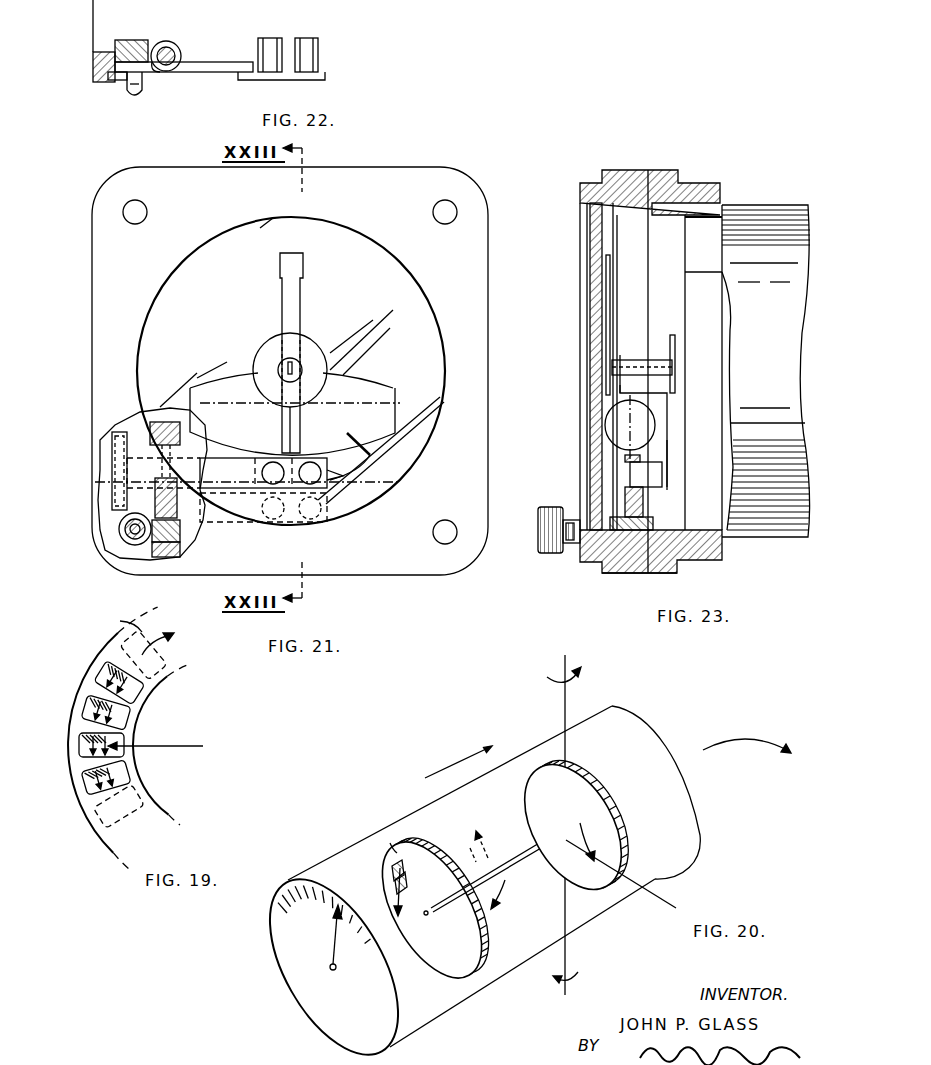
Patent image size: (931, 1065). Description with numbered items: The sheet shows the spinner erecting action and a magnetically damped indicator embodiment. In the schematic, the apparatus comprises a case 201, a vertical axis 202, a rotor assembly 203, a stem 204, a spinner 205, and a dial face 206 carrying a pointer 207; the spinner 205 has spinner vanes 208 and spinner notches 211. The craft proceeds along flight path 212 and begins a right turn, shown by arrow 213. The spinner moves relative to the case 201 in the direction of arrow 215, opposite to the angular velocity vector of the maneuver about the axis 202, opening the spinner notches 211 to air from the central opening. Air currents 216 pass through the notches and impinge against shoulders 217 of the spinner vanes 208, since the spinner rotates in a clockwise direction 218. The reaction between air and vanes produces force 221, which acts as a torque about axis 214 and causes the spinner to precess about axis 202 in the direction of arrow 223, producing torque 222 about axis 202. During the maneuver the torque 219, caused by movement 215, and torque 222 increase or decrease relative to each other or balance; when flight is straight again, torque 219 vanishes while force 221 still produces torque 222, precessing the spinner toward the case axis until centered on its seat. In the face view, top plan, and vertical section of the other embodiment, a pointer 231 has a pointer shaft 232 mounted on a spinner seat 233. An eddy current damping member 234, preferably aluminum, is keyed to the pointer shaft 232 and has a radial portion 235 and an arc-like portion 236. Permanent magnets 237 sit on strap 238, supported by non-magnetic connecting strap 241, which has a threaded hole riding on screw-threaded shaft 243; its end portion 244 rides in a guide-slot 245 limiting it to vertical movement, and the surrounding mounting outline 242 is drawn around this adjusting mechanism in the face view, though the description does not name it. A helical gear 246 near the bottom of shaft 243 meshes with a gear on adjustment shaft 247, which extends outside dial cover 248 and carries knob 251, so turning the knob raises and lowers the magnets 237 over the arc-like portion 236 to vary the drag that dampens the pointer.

In FIG. 20, the case 201 is at (407, 813).
In FIG. 20, the vertical axis 202 is at (567, 943).
In FIG. 20, the rotor assembly 203 is at (598, 805).
In FIG. 20, the stem 204 is at (513, 860).
In FIG. 19, the spinner 205 is at (98, 661).
In FIG. 20, the spinner 205 is at (437, 853).
In FIG. 20, the dial face 206 is at (358, 1015).
In FIG. 20, the pointer 207 is at (335, 950).
In FIG. 19, the spinner vanes 208 is at (138, 709).
In FIG. 19, the spinner notches 211 is at (125, 770).
In FIG. 20, the spinner notches 211 is at (390, 843).
In FIG. 20, the flight path 212 is at (452, 768).
In FIG. 20, the arrow (right turn) 213 is at (728, 742).
In FIG. 20, the axis 214 is at (672, 898).
In FIG. 20, the arrow (spinner movement direction) 215 is at (497, 905).
In FIG. 19, the air currents 216 is at (186, 747).
In FIG. 19, the shoulders 217 is at (84, 788).
In FIG. 19, the clockwise direction 218 is at (131, 634).
In FIG. 20, the clockwise direction 218 is at (612, 830).
In FIG. 20, the torque 219 is at (582, 671).
In FIG. 19, the force 221 is at (95, 746).
In FIG. 20, the force 221 is at (391, 868).
In FIG. 20, the torque 222 is at (587, 981).
In FIG. 20, the arrow (precession) 223 is at (486, 837).
In FIG. 21, the pointer 231 is at (288, 303).
In FIG. 23, the pointer 231 is at (606, 303).
In FIG. 23, the pointer shaft 232 is at (612, 365).
In FIG. 23, the spinner seat 233 is at (678, 362).
In FIG. 21, the eddy current damping member 234 is at (306, 423).
In FIG. 23, the eddy current damping member 234 is at (675, 413).
In FIG. 21, the radial portion 235 is at (300, 418).
In FIG. 23, the radial portion 235 is at (655, 427).
In FIG. 21, the arc-like portion 236 is at (345, 443).
In FIG. 23, the arc-like portion 236 is at (667, 478).
In FIG. 22, the permanent magnets 237 is at (300, 40).
In FIG. 21, the permanent magnets 237 is at (275, 524).
In FIG. 23, the permanent magnets 237 is at (655, 471).
In FIG. 22, the strap 238 is at (326, 77).
In FIG. 21, the strap 238 is at (340, 482).
In FIG. 22, the connecting strap 241 is at (213, 67).
In FIG. 21, the connecting strap 241 is at (227, 453).
In FIG. 21, the bracket 242 is at (135, 433).
In FIG. 21, the screw-threaded shaft 243 is at (155, 496).
In FIG. 23, the screw-threaded shaft 243 is at (643, 505).
In FIG. 22, the end portion 244 is at (137, 60).
In FIG. 22, the guide-slot 245 is at (115, 79).
In FIG. 21, the guide-slot 245 is at (112, 470).
In FIG. 22, the helical gear 246 is at (176, 44).
In FIG. 21, the helical gear 246 is at (182, 533).
In FIG. 22, the adjustment shaft 247 is at (143, 84).
In FIG. 21, the adjustment shaft 247 is at (120, 542).
In FIG. 23, the adjustment shaft 247 is at (575, 519).
In FIG. 23, the dial cover 248 is at (622, 563).
In FIG. 23, the knob 251 is at (554, 556).